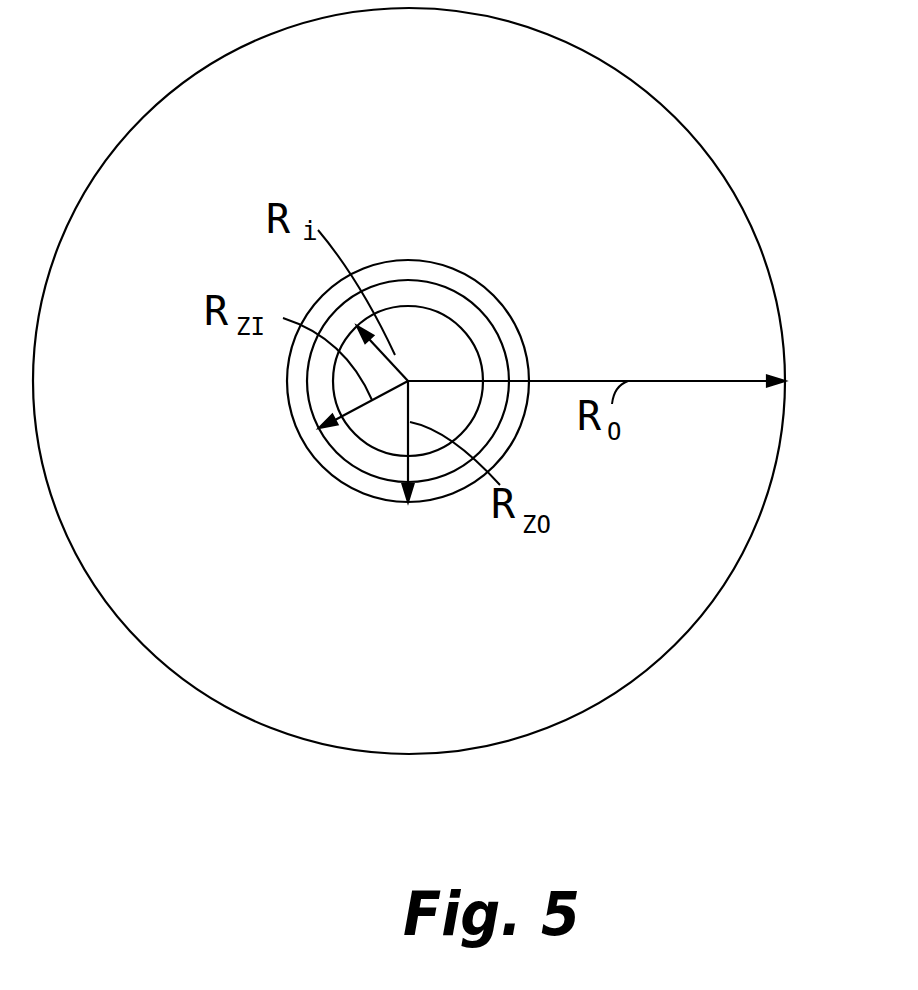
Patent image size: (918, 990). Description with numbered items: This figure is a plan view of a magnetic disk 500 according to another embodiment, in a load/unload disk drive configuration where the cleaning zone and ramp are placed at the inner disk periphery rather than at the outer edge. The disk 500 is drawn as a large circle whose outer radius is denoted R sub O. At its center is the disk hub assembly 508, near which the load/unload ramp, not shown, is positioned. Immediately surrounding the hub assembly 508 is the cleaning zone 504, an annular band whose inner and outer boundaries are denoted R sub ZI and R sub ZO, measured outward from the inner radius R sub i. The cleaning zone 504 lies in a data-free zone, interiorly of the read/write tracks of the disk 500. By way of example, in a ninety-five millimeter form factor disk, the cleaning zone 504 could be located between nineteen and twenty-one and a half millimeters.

The disk 500 is at (633, 678).
The cleaning zone 504 is at (318, 472).
The disk hub assembly 508 is at (410, 370).